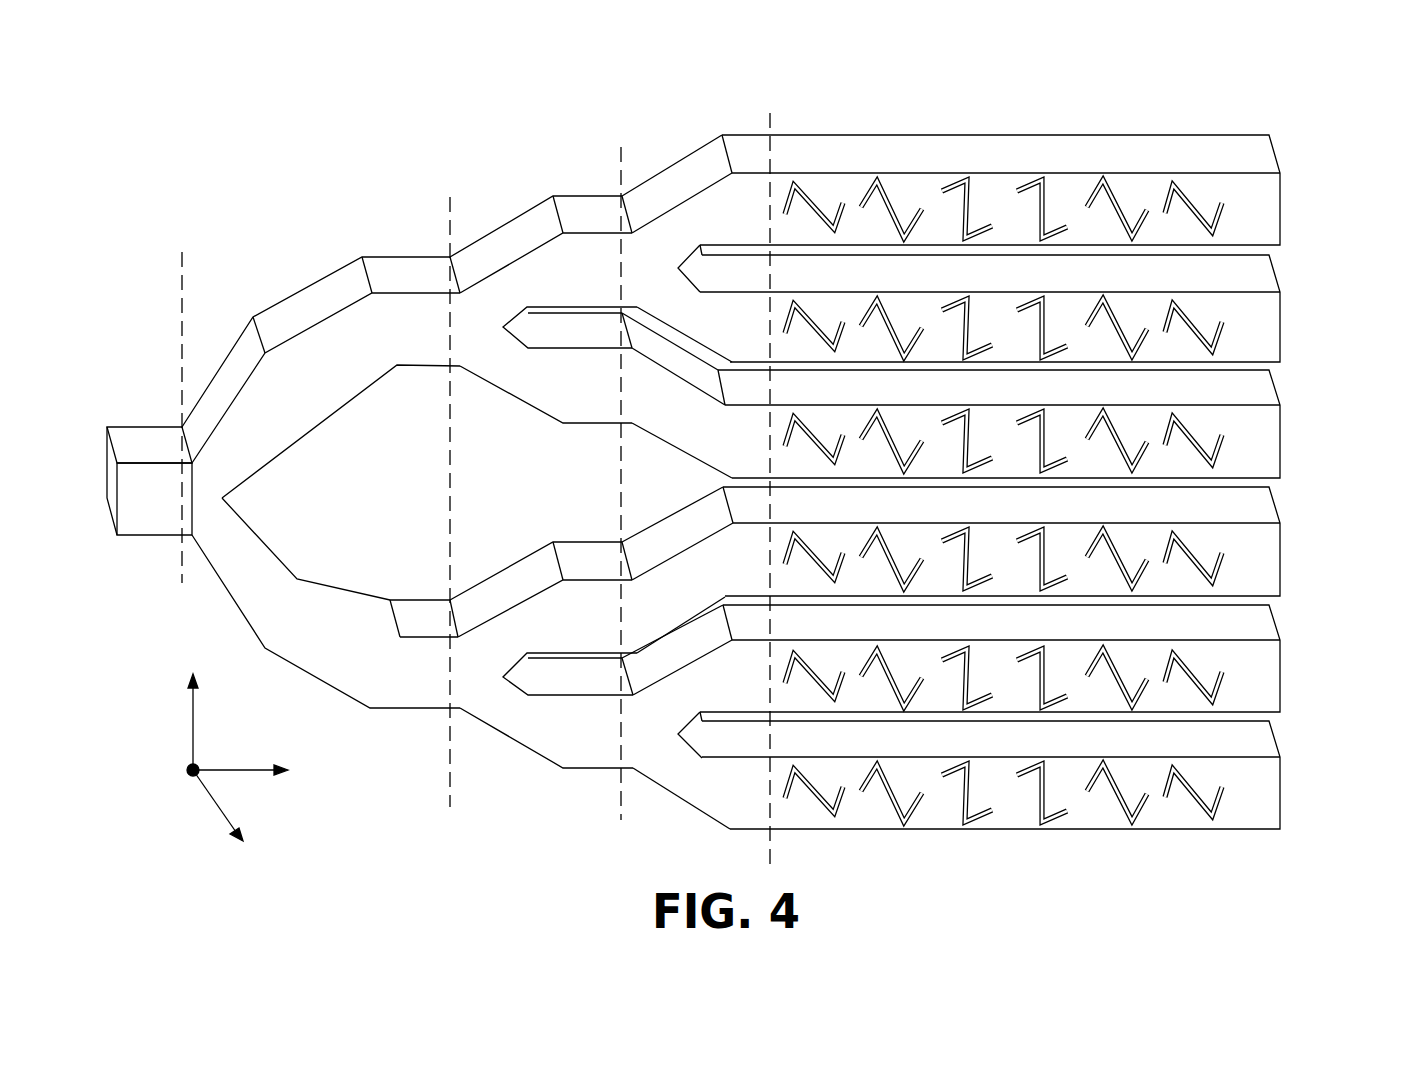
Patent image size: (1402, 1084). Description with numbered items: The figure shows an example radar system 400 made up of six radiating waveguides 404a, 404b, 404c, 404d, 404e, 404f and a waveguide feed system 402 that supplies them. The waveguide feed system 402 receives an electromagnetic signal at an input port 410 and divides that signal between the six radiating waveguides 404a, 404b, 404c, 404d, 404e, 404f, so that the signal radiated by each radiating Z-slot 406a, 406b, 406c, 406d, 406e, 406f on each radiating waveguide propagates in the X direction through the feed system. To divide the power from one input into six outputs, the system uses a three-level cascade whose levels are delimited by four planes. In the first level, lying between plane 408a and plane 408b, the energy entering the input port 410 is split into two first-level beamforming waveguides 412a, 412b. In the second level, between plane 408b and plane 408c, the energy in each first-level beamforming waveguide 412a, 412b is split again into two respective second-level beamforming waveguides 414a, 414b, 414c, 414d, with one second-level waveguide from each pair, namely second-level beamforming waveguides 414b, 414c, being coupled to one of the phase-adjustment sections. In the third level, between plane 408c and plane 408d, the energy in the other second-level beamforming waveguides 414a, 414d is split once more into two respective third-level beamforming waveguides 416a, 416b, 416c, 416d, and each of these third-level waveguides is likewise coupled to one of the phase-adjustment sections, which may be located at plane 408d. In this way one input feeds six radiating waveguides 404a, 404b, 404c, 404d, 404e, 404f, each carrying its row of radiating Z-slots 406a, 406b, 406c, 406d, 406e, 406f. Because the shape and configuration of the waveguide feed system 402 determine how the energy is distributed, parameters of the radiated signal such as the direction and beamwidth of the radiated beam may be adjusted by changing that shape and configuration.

The radar system 400 is at (268, 165).
The waveguide feed system 402 is at (318, 280).
The radiating waveguide 404a is at (1282, 207).
The radiating waveguide 404b is at (1282, 326).
The radiating waveguide 404c is at (1282, 440).
The radiating waveguide 404d is at (1282, 560).
The radiating waveguide 404e is at (1282, 673).
The radiating waveguide 404f is at (1282, 788).
The radiating Z-slot 406a is at (813, 202).
The radiating Z-slot 406b is at (890, 202).
The radiating Z-slot 406c is at (950, 183).
The radiating Z-slot 406d is at (1023, 183).
The radiating Z-slot 406e is at (1118, 192).
The radiating Z-slot 406f is at (1193, 198).
The plane 408a is at (182, 252).
The plane 408b is at (450, 197).
The plane 408c is at (620, 147).
The plane 408d is at (770, 113).
The input port 410 is at (105, 427).
The first-level beamforming waveguide 412a is at (430, 340).
The first-level beamforming waveguide 412b is at (430, 682).
The second-level beamforming waveguide 414a is at (605, 282).
The second-level beamforming waveguide 414b is at (605, 396).
The second-level beamforming waveguide 414c is at (605, 622).
The second-level beamforming waveguide 414d is at (605, 747).
The third-level beamforming waveguide 416a is at (762, 220).
The third-level beamforming waveguide 416b is at (762, 342).
The third-level beamforming waveguide 416c is at (758, 687).
The third-level beamforming waveguide 416d is at (758, 810).